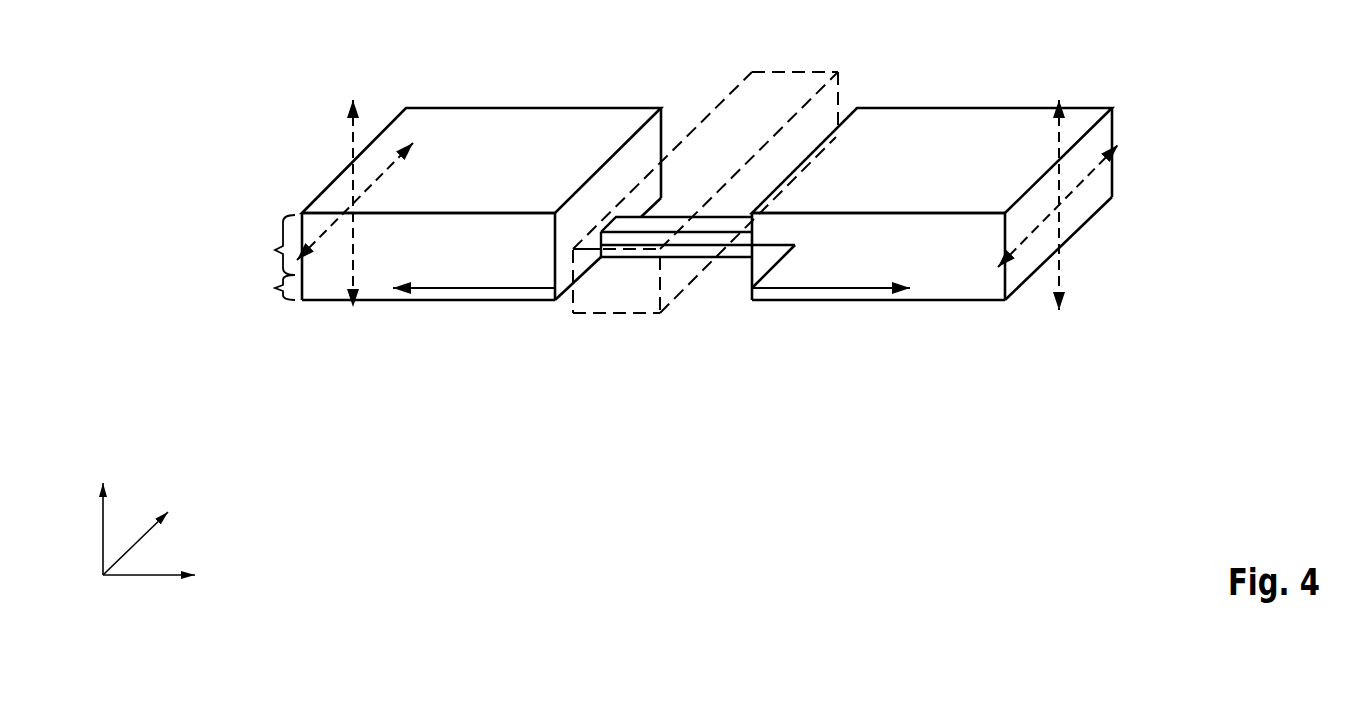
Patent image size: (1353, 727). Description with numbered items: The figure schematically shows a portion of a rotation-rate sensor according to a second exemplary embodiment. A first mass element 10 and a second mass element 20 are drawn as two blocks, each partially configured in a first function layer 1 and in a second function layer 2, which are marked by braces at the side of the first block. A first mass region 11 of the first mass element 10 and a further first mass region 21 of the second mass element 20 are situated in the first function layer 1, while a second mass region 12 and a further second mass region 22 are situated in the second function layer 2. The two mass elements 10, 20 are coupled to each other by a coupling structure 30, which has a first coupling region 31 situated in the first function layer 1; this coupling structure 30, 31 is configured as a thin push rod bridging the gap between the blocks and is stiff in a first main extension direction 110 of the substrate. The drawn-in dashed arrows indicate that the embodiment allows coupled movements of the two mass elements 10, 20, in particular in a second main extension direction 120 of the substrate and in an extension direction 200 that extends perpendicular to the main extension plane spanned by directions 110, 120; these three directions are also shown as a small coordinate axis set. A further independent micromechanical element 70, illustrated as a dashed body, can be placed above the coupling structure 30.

The first function layer 1 is at (279, 287).
The second function layer 2 is at (279, 245).
The first mass element 10 is at (481, 203).
The first mass region 11 is at (433, 298).
The second mass region 12 is at (428, 287).
The second mass element 20 is at (932, 203).
The further first mass region 21 is at (933, 298).
The further second mass region 22 is at (878, 287).
The coupling structure 30 is at (683, 285).
The first coupling region 31 is at (707, 225).
The further independent micromechanical element 70 is at (777, 92).
The first main extension direction 110 is at (200, 588).
The second main extension direction 120 is at (152, 505).
The extension direction 200 is at (83, 479).